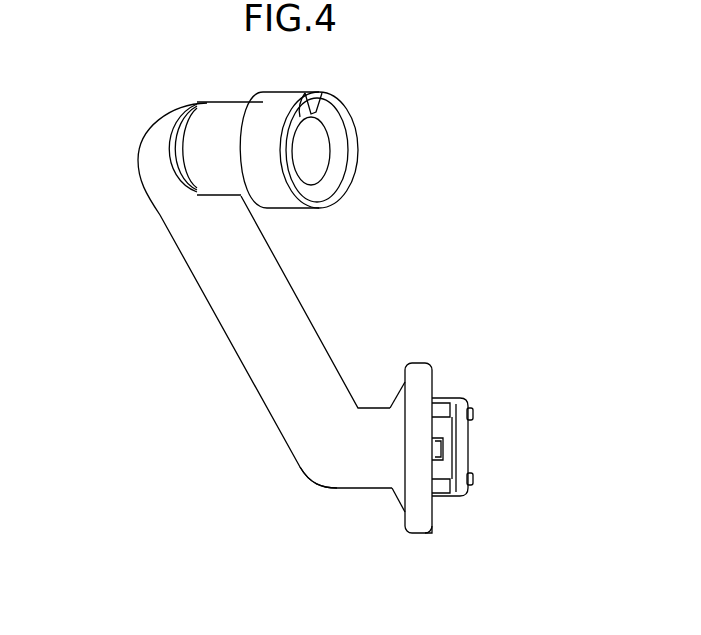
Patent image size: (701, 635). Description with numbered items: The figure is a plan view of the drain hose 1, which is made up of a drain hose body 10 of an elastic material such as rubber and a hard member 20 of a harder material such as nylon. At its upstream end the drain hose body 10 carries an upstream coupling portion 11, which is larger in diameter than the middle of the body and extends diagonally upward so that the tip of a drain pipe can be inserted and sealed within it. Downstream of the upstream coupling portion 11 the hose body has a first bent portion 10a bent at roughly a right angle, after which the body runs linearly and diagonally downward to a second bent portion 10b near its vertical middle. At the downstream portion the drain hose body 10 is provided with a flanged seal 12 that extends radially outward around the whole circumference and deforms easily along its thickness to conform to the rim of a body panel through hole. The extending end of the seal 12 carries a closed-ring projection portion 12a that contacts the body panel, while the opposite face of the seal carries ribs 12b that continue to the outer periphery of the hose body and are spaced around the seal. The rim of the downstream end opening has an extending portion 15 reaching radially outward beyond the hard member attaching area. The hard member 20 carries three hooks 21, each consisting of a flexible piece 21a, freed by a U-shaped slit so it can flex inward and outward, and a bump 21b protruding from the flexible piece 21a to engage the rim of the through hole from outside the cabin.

The drain hose 1 is at (482, 155).
The drain hose body 10 is at (287, 277).
The first bent portion 10a is at (147, 133).
The second bent portion 10b is at (315, 487).
The upstream coupling portion 11 is at (228, 118).
The seal 12 is at (419, 362).
The projection portion 12a is at (432, 533).
The ribs 12b is at (398, 396).
The extending portion 15 is at (470, 467).
The hard member 20 is at (431, 423).
The hooks 21 is at (446, 399).
The flexible piece 21a is at (447, 450).
The bump 21b is at (445, 397).